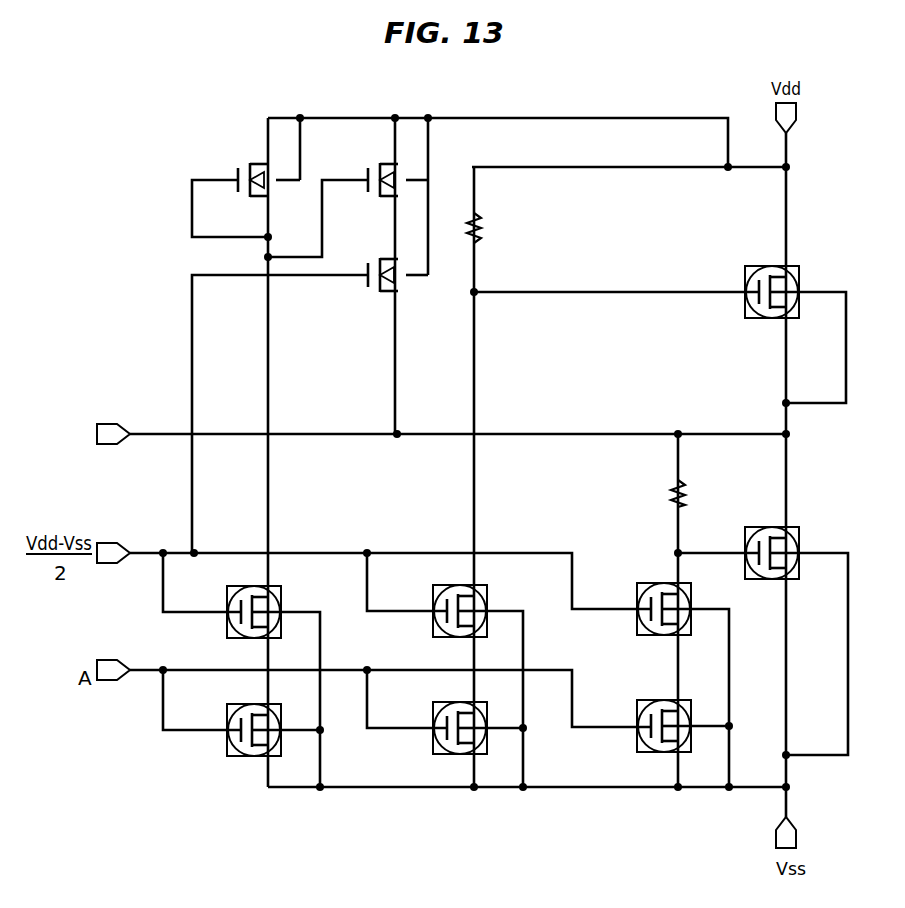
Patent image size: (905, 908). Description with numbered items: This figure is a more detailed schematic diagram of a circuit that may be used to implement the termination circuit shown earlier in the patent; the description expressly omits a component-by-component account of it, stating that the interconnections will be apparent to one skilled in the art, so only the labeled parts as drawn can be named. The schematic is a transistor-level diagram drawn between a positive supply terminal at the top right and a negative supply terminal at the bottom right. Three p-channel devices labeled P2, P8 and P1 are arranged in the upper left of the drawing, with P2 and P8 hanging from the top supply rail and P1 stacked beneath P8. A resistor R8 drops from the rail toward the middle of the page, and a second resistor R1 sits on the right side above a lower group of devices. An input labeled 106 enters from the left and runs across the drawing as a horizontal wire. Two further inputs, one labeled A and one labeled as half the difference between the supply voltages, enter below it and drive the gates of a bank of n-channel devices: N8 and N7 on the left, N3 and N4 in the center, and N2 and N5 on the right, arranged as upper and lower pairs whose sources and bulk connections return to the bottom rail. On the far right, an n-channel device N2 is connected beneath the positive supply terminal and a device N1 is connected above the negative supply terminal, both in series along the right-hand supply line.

The input node 106 is at (98, 431).
The PMOS transistor P2 is at (251, 166).
The PMOS transistor P8 is at (381, 166).
The PMOS transistor P1 is at (381, 263).
The resistor R8 is at (487, 228).
The resistor R1 is at (664, 495).
The NMOS transistor N2 is at (730, 445).
The NMOS transistor N1 is at (785, 548).
The NMOS transistor N8 is at (267, 607).
The NMOS transistor N7 is at (267, 724).
The NMOS transistor N3 is at (473, 605).
The NMOS transistor N4 is at (473, 722).
The NMOS transistor N5 is at (677, 720).